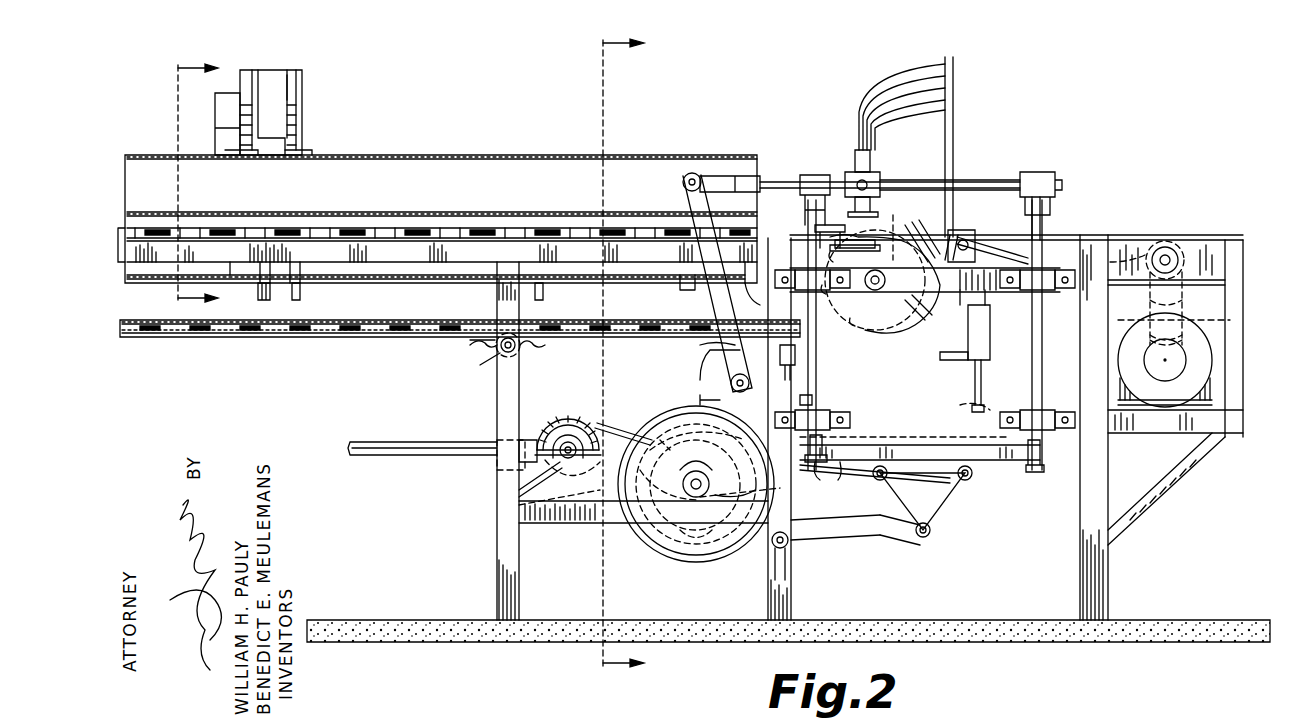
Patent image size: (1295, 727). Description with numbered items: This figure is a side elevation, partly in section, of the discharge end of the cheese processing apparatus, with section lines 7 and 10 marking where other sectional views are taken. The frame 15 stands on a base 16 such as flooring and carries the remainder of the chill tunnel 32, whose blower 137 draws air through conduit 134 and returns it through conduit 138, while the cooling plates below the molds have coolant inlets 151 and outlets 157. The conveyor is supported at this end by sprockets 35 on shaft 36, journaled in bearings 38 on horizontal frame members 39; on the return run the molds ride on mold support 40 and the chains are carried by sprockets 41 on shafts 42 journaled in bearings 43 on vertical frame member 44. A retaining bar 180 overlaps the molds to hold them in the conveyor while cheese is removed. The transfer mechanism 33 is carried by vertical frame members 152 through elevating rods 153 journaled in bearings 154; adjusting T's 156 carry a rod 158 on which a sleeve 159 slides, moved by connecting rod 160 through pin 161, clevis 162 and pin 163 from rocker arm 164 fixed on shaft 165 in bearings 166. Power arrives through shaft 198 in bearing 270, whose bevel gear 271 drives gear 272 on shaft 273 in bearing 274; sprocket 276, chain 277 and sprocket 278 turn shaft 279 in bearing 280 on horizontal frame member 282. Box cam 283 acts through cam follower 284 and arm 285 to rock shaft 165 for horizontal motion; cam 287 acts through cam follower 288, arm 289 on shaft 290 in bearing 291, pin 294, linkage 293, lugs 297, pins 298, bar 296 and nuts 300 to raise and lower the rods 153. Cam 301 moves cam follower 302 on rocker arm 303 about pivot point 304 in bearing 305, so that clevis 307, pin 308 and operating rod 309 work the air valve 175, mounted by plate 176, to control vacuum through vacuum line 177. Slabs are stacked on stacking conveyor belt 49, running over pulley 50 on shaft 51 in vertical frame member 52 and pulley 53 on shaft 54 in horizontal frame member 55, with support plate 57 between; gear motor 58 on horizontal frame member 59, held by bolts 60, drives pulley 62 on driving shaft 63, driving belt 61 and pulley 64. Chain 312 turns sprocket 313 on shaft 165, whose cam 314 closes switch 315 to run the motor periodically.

The section line 7 is at (187, 184).
The section line 10 is at (607, 354).
The frame 15 is at (1110, 586).
The base 16 is at (1160, 642).
The chill tunnel 32 is at (437, 156).
The transfer mechanism 33 is at (907, 66).
The sprockets 35 is at (875, 266).
The shaft 36 is at (905, 235).
The bearings 38 is at (885, 267).
The horizontal frame members 39 is at (886, 280).
The mold support 40 is at (925, 318).
The sprockets 41 is at (522, 344).
The shafts 42 is at (500, 355).
The bearings 43 is at (470, 350).
The vertical frame member 44 is at (497, 408).
The stacking conveyor belt 49 is at (1085, 235).
The pulley 50 is at (970, 250).
The shaft 51 is at (955, 232).
The vertical frame member 52 is at (968, 240).
The pulley 53 is at (1180, 248).
The shaft 54 is at (1178, 256).
The horizontal frame member 55 is at (1210, 262).
The support plate 57 is at (1045, 235).
The gear motor 58 is at (1212, 360).
The horizontal frame member 59 is at (1195, 440).
The bolts 60 is at (1135, 385).
The driving belt 61 is at (1185, 290).
The pulley 62 is at (1215, 322).
The driving shaft 63 is at (1145, 290).
The pulley 64 is at (1160, 240).
The conduit 134 is at (215, 118).
The blower 137 is at (300, 75).
The conduit 138 is at (290, 93).
The inlets 151 is at (300, 298).
The vertical frame members 152 is at (748, 293).
The elevating rods 153 is at (818, 360).
The bearings 154 is at (850, 292).
The adjusting T's 156 is at (1052, 168).
The outlets 157 is at (265, 296).
The rod 158 is at (985, 180).
The sleeve 159 is at (875, 178).
The connecting rod 160 is at (790, 180).
The pin 161 is at (858, 182).
The clevis 162 is at (732, 176).
The pin 163 is at (693, 173).
The rocker arm 164 is at (700, 200).
The shaft 165 is at (702, 362).
The bearings 166 is at (700, 345).
The air valve 175 is at (990, 345).
The plate 176 is at (990, 330).
The vacuum line 177 is at (950, 360).
The retaining bar 180 is at (822, 225).
The shaft 198 is at (383, 442).
The bearing 270 is at (497, 475).
The bevel gear 271 is at (548, 432).
The second gear 272 is at (578, 420).
The shaft 273 is at (519, 492).
The bearing 274 is at (560, 470).
The sprocket 276 is at (580, 510).
The chain 277 is at (635, 430).
The sprocket 278 is at (655, 412).
The shaft 279 is at (660, 545).
The bearing 280 is at (688, 498).
The horizontal frame member 282 is at (519, 508).
The box cam 283 is at (738, 548).
The cam follower 284 is at (780, 498).
The arm 285 is at (712, 404).
The cam 287 is at (795, 530).
The cam follower 288 is at (694, 562).
The arm 289 is at (880, 550).
The shaft 290 is at (790, 552).
The bearing 291 is at (795, 592).
The linkage 293 is at (958, 505).
The pin 294 is at (932, 534).
The bar 296 is at (920, 456).
The lugs 297 is at (925, 436).
The pins 298 is at (878, 483).
The nuts 300 is at (1042, 472).
The cam 301 is at (650, 478).
The cam follower 302 is at (705, 445).
The rocker arm 303 is at (815, 478).
The pivot point 304 is at (850, 470).
The bearing 305 is at (830, 455).
The clevis 307 is at (985, 395).
The pin 308 is at (970, 388).
The operating rod 309 is at (983, 372).
The chain 312 is at (460, 320).
The sprocket 313 is at (728, 383).
The cam 314 is at (814, 400).
The switch 315 is at (798, 352).